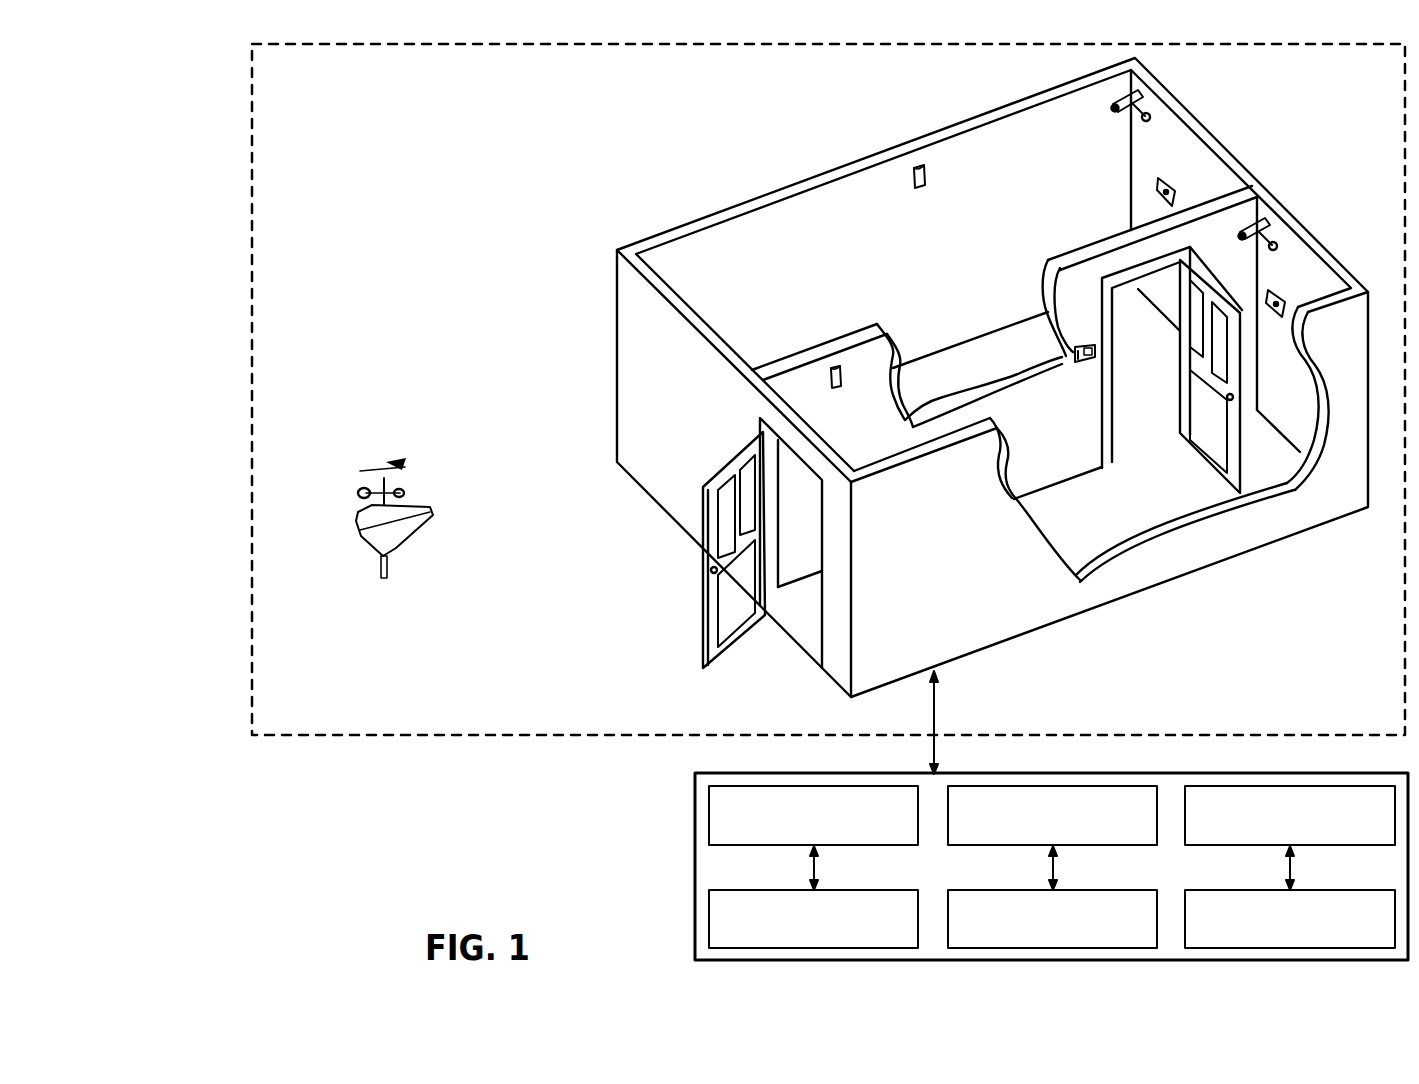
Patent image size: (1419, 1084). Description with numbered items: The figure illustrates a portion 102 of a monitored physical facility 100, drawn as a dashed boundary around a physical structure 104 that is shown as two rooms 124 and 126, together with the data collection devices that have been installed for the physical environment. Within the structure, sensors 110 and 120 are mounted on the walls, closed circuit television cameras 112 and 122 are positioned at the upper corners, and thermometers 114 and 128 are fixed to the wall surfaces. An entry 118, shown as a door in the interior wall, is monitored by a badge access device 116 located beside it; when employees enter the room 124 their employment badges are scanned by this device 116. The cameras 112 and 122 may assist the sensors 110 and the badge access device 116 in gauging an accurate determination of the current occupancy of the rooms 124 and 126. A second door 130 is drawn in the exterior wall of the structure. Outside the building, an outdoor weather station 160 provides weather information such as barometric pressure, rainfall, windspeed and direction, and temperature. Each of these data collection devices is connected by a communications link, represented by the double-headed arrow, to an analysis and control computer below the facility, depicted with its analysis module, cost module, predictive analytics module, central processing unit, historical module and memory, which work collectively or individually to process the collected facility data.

The physical facility 100 is at (192, 121).
The portion 102 is at (252, 212).
The physical structure 104 is at (616, 291).
The sensor 110 is at (913, 178).
The closed circuit television (CCTV) camera 112 is at (1140, 86).
The thermometer 114 is at (1165, 179).
The badge access device 116 is at (1089, 362).
The entry 118 is at (1210, 422).
The sensor 120 is at (830, 376).
The closed circuit television (CCTV) camera 122 is at (1260, 214).
The room 124 is at (848, 252).
The room 126 is at (1088, 531).
The thermometer 128 is at (1274, 289).
The exterior door 130 is at (703, 606).
The outdoor weather station 160 is at (433, 510).